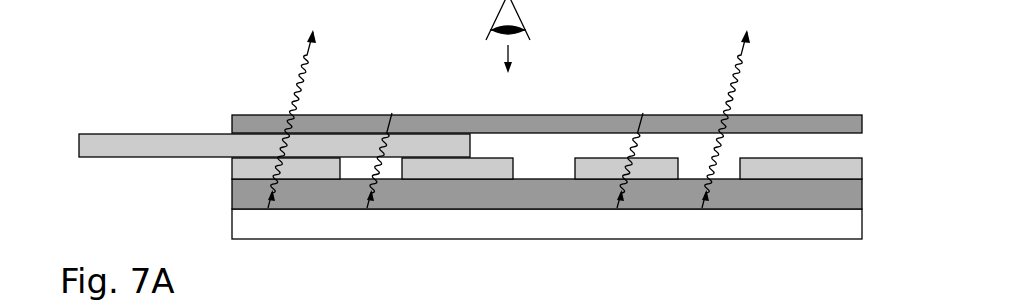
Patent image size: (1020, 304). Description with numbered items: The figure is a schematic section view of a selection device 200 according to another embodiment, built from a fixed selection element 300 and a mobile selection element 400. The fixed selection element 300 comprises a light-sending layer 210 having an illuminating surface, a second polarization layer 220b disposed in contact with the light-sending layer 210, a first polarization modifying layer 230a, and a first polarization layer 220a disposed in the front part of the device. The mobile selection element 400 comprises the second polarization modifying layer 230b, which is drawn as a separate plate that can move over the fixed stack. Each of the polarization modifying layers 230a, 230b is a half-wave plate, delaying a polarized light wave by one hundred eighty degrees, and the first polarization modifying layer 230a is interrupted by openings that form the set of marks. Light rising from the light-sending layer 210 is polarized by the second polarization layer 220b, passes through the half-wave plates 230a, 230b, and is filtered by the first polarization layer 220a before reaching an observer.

The fixed selection element 300 is at (871, 228).
The selection device 200 is at (97, 189).
The mobile selection element 400 is at (65, 130).
The light-sending layer 210 is at (242, 225).
The first polarization layer 220a is at (243, 122).
The second polarization layer 220b is at (238, 193).
The first polarization modifying layer 230a is at (237, 170).
The second polarization modifying layer 230b is at (115, 140).